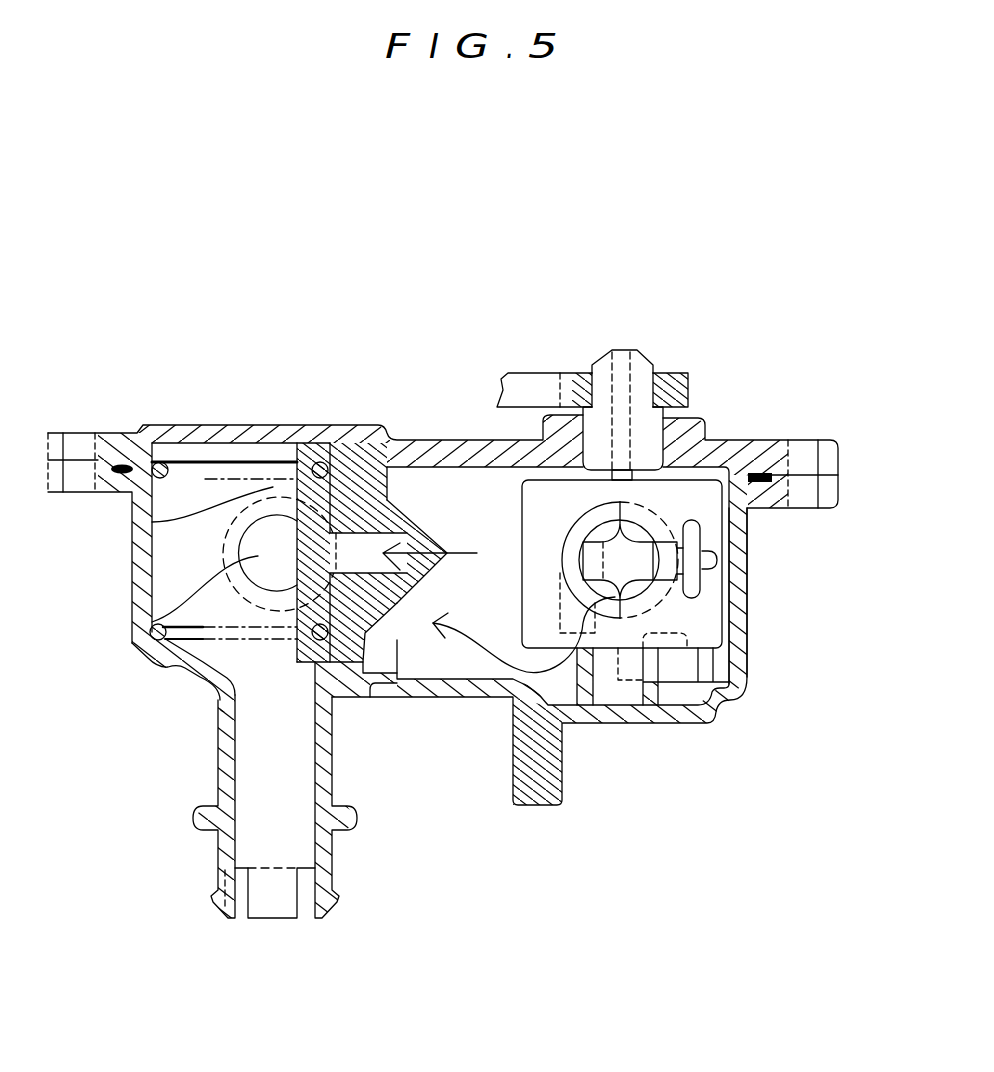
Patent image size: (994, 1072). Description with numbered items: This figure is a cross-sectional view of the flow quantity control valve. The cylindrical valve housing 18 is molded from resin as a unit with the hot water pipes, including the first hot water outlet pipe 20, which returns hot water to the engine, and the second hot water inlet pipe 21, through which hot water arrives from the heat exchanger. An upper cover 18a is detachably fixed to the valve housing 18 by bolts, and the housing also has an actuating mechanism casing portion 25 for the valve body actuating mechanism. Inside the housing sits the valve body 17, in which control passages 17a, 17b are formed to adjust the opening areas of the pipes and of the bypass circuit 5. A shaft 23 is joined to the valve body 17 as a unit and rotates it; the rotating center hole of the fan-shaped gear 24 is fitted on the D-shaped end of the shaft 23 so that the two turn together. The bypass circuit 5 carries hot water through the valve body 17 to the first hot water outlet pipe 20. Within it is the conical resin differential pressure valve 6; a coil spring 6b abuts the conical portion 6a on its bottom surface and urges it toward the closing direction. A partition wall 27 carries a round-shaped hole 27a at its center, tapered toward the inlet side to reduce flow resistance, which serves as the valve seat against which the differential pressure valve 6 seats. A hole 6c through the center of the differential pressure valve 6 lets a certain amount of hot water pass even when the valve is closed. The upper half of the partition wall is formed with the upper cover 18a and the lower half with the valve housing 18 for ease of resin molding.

The bypass circuit 5 is at (498, 612).
The differential pressure valve 6 is at (443, 610).
The conical portion 6a is at (152, 522).
The coil spring 6b is at (205, 476).
The hole 6c is at (424, 543).
The valve body 17 is at (716, 505).
The control passage 17a is at (690, 569).
The control passage 17b is at (690, 569).
The valve housing 18 is at (742, 613).
The upper cover 18a is at (752, 456).
The first hot water outlet pipe 20 is at (136, 645).
The second hot water inlet pipe 21 is at (237, 768).
The shaft 23 is at (650, 442).
The fan-shaped gear 24 is at (538, 388).
The actuating mechanism casing portion 25 is at (134, 545).
The partition wall 27 is at (366, 470).
The round-shaped hole 27a is at (388, 497).